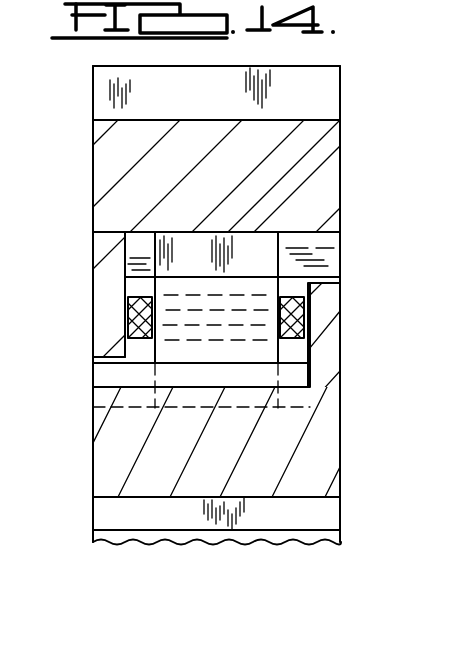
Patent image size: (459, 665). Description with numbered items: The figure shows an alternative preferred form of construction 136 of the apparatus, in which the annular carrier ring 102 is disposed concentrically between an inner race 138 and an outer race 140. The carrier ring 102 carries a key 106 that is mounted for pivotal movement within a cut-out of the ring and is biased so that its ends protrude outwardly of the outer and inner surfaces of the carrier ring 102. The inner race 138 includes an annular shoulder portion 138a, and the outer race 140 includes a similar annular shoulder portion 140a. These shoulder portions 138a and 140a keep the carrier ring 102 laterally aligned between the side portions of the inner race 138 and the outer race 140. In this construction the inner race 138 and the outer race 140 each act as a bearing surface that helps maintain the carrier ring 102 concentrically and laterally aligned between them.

The alternative preferred form of construction 136 is at (363, 117).
The outer race 140 is at (328, 185).
The annular shoulder portion 140a is at (107, 310).
The key 106 is at (246, 254).
The carrier ring 102 is at (127, 337).
The inner race 138 is at (123, 455).
The annular shoulder portion 138a is at (336, 298).